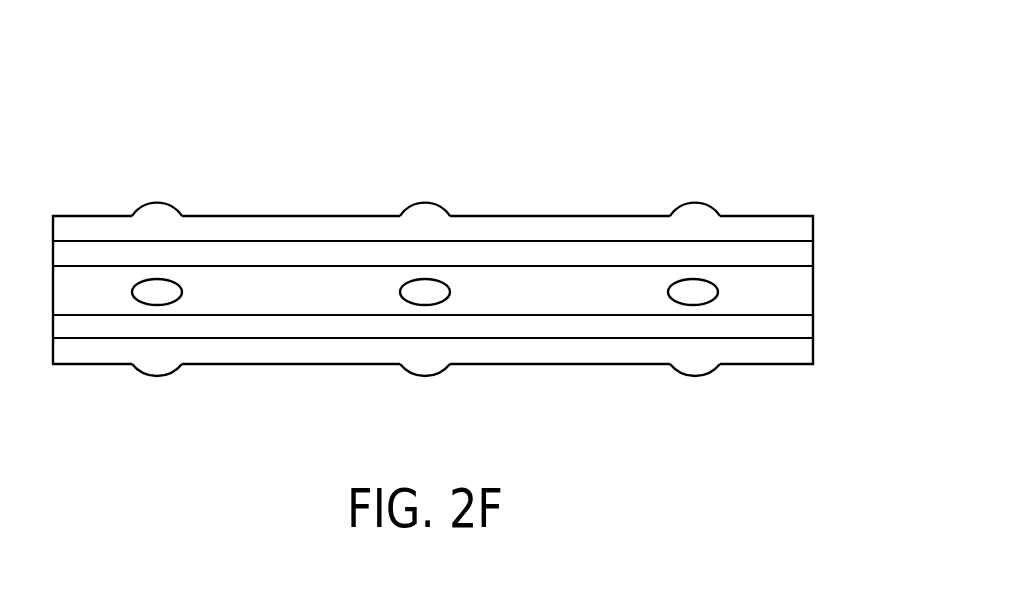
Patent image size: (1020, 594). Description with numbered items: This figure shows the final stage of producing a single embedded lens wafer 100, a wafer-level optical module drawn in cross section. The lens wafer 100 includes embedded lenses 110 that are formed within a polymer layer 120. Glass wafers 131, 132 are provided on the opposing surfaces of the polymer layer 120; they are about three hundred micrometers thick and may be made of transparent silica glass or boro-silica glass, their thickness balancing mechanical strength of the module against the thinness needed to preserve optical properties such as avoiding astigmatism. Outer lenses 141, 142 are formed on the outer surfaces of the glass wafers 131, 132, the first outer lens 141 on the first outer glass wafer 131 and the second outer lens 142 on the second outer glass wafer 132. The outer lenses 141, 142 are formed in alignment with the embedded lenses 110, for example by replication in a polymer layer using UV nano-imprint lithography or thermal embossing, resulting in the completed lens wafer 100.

The lens wafer 100 is at (115, 80).
The embedded lenses 110 is at (157, 292).
The polymer layer 120 is at (803, 290).
The first outer glass wafer 131 is at (803, 252).
The second outer glass wafer 132 is at (803, 328).
The first outer lens 141 is at (155, 215).
The second outer lens 142 is at (162, 368).